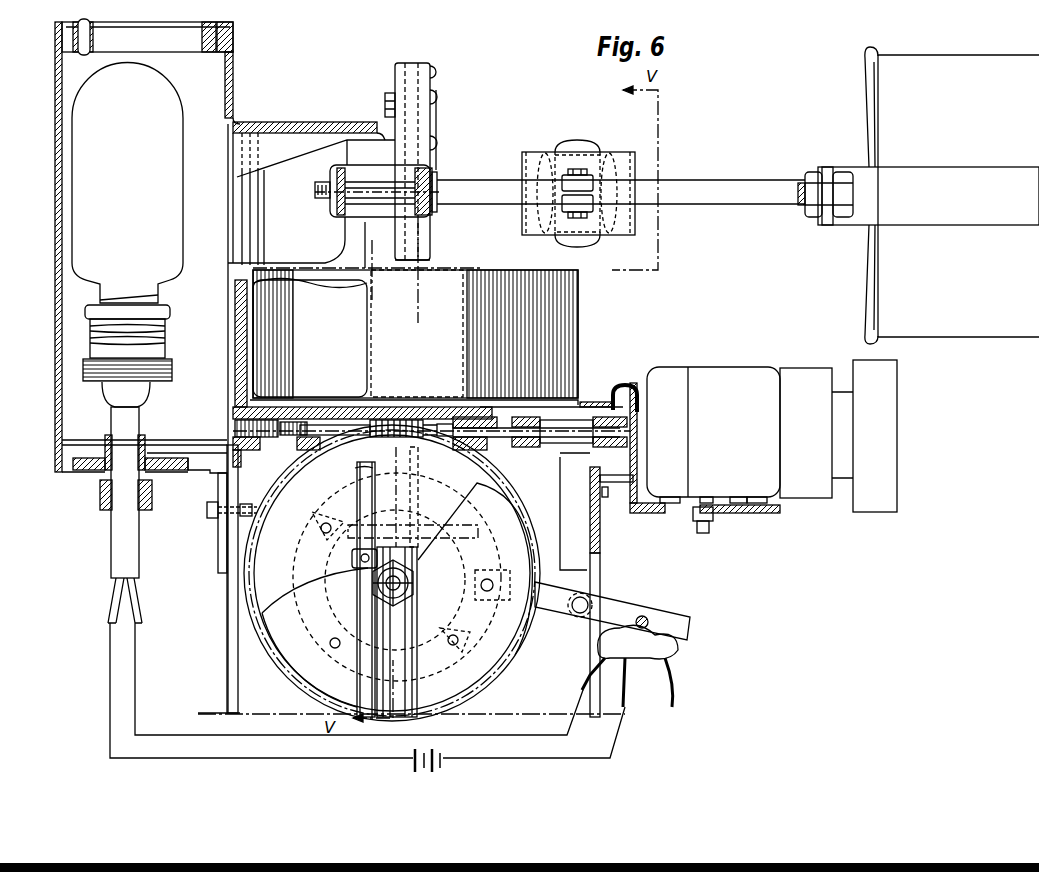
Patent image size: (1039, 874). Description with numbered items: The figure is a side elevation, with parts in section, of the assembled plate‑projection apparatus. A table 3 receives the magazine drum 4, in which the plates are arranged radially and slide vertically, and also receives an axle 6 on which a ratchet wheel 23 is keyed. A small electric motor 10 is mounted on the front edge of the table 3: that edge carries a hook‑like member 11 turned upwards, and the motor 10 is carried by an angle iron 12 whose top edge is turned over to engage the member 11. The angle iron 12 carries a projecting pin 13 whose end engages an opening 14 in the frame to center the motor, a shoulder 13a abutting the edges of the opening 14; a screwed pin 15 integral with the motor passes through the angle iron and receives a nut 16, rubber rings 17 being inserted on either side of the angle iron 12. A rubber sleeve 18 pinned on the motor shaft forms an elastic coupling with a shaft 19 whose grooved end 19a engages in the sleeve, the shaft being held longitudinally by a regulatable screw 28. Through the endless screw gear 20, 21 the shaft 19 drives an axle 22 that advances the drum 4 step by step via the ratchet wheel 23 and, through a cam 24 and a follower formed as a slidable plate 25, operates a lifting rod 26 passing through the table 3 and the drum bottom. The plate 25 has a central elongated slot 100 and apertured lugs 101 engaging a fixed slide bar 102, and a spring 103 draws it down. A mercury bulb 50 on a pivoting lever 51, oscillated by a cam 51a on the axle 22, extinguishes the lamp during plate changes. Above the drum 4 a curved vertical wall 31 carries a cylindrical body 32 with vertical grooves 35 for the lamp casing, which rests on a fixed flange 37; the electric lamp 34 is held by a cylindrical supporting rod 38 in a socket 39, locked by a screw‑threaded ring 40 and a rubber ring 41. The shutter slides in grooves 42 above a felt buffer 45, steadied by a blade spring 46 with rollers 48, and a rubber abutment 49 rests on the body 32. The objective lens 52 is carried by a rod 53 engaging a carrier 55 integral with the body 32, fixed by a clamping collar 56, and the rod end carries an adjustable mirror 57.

The table 3 is at (315, 412).
The magazine drum 4 is at (579, 300).
The axle 6 is at (372, 589).
The electric motor 10 is at (772, 436).
The hook-like member 11 is at (586, 402).
The angle iron 12 is at (650, 514).
The projecting pin 13 is at (597, 487).
The shoulder 13a is at (605, 498).
The opening 14 is at (606, 478).
The screwed pin 15 is at (703, 532).
The nut 16 is at (716, 528).
The rings 17 is at (686, 514).
The rubber sleeve 18 is at (535, 418).
The shaft 19 is at (470, 428).
The grooved end 19a is at (522, 447).
The endless screw gear 20 is at (383, 418).
The endless screw gear 21 is at (288, 482).
The axle 22 is at (417, 585).
The ratchet wheel 23 is at (395, 542).
The cam 24 is at (417, 632).
The slidable plate 25 is at (418, 614).
The lifting rod 26 is at (420, 478).
The regulatable screw 28 is at (283, 418).
The curved vertical wall 31 is at (246, 329).
The cylindrical body 32 is at (318, 160).
The electric lamp 34 is at (127, 235).
The vertical groove 35 is at (57, 222).
The fixed flange 37 is at (210, 482).
The cylindrical supporting rod 38 is at (118, 418).
The socket 39 is at (143, 446).
The screw-threaded ring 40 is at (104, 511).
The rubber ring 41 is at (147, 511).
The grooves 42 is at (437, 72).
The buffer 45 is at (420, 263).
The blade spring 46 is at (438, 98).
The rollers 48 is at (438, 144).
The rubber abutment 49 is at (392, 97).
The bulb 50 is at (680, 643).
The pivoting lever 51 is at (633, 610).
The cam 51a is at (496, 585).
The objective lens 52 is at (533, 152).
The rod 53 is at (502, 200).
The carrier 55 is at (374, 180).
The clamping collar 56 is at (580, 146).
The adjustable mirror 57 is at (918, 195).
The central elongated slot 100 is at (410, 690).
The apertured lug 101 is at (352, 556).
The fixed slide bar 102 is at (358, 469).
The spring 103 is at (365, 576).